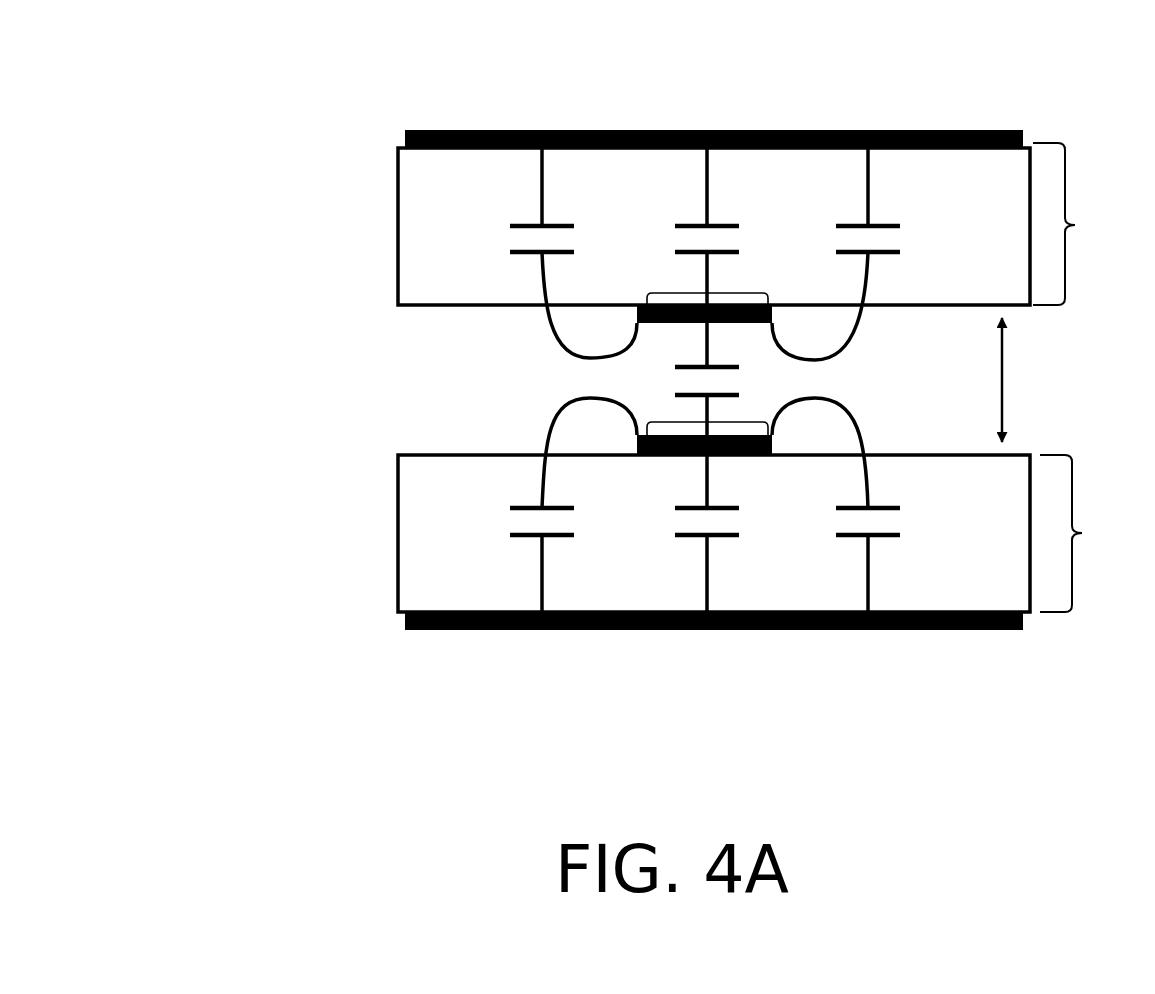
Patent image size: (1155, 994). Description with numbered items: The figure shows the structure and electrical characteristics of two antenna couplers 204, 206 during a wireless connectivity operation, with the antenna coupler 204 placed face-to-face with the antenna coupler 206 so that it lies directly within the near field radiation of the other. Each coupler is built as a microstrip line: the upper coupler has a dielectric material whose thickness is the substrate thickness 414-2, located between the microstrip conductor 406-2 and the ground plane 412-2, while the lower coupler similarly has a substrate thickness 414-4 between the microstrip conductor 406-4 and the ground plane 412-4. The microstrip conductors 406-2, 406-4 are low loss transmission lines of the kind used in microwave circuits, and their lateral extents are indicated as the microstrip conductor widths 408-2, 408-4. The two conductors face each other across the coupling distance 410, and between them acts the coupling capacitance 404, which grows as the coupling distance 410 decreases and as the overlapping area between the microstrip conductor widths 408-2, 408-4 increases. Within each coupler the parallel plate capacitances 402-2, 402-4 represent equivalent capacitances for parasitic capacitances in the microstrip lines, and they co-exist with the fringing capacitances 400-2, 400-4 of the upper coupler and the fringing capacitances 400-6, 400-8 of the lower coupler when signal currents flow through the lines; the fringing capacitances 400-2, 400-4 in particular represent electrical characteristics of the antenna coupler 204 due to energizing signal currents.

The antenna coupler 204 is at (360, 165).
The antenna coupler 206 is at (343, 473).
The fringing capacitance 400-2 is at (538, 253).
The fringing capacitance 400-4 is at (874, 254).
The fringing capacitance 400-6 is at (870, 505).
The fringing capacitance 400-8 is at (536, 505).
The parallel plate capacitance 402-2 is at (740, 257).
The parallel plate capacitance 402-4 is at (742, 503).
The coupling capacitance 404 is at (731, 381).
The microstrip conductor 406-2 is at (668, 334).
The microstrip conductor 406-4 is at (683, 462).
The microstrip conductor width 408-2 is at (694, 278).
The microstrip conductor width 408-4 is at (690, 412).
The coupling distance 410 is at (1025, 380).
The ground plane 412-2 is at (972, 122).
The ground plane 412-4 is at (970, 638).
The substrate thickness 414-2 is at (1092, 224).
The substrate thickness 414-4 is at (1097, 533).